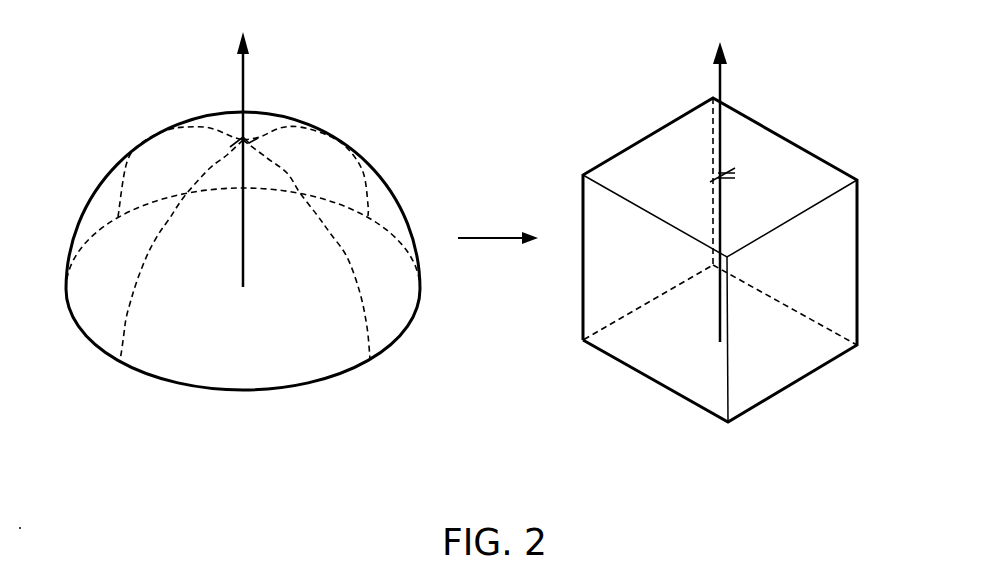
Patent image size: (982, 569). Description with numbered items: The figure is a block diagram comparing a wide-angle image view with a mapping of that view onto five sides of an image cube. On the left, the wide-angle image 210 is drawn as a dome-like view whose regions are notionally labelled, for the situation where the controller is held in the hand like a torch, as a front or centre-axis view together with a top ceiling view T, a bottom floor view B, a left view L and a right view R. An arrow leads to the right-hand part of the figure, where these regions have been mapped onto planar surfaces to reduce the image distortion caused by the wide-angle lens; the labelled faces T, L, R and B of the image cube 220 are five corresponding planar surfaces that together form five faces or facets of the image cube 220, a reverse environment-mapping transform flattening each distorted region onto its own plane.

The wide-angle image 210 is at (222, 392).
The image cube 220 is at (700, 408).
The top ceiling view T is at (539, 176).
The left view L is at (383, 228).
The right view R is at (587, 265).
The bottom floor view B is at (456, 297).